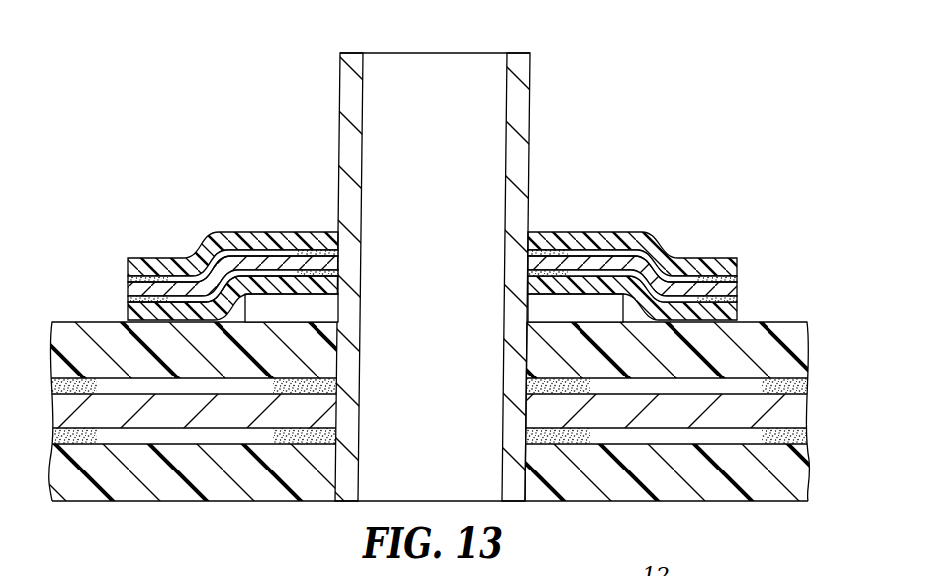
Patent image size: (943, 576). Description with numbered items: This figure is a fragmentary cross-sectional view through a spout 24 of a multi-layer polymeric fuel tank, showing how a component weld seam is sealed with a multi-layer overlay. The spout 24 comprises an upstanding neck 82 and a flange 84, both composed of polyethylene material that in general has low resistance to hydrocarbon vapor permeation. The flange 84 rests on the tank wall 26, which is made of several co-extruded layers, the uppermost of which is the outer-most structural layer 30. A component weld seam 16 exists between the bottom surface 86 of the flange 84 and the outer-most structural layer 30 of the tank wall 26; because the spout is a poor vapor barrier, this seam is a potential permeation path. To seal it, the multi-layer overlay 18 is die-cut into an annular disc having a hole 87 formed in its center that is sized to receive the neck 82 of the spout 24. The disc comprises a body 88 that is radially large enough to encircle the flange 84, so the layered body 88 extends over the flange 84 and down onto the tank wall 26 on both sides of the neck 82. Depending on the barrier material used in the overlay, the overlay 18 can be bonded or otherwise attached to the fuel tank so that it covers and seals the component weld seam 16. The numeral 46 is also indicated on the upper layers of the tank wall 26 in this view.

The component weld seam 16 is at (528, 343).
The multi-layer overlay 18 is at (624, 241).
The spout 24 is at (470, 252).
The tank wall 26 is at (450, 363).
The outer-most structural layer 30 is at (803, 347).
The upper layer of circuit board 46 is at (83, 321).
The neck 82 is at (522, 114).
The flange 84 is at (262, 309).
The bottom surface 86 is at (314, 326).
The hole 87 is at (528, 262).
The body 88 is at (606, 232).